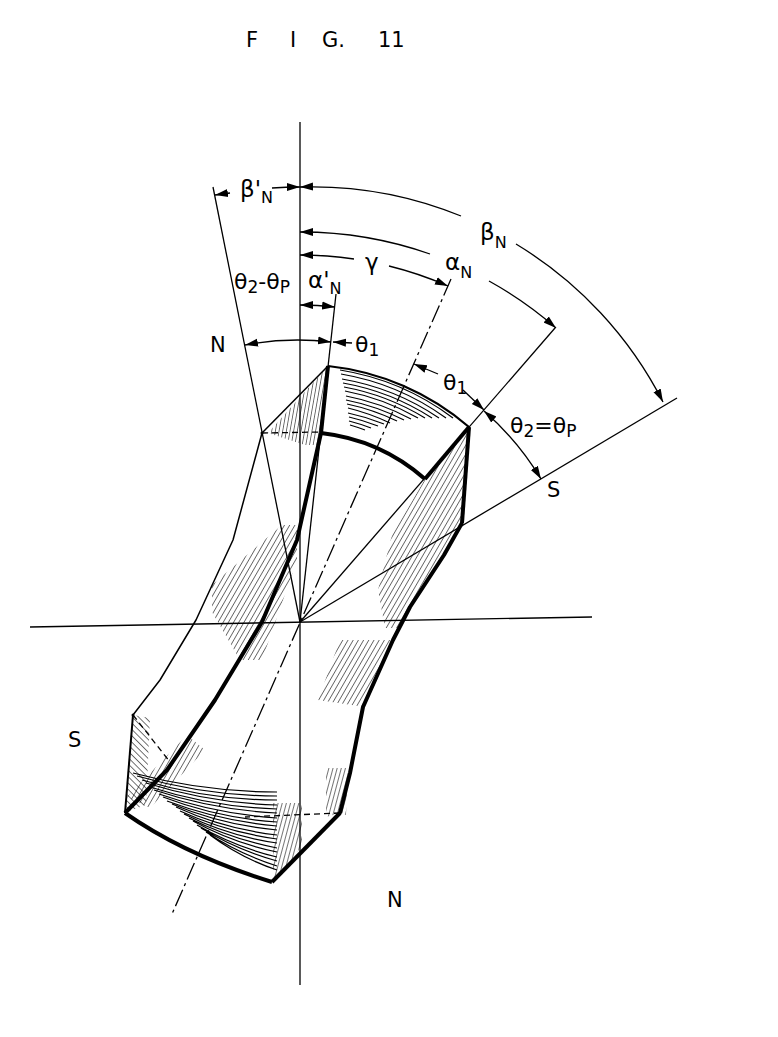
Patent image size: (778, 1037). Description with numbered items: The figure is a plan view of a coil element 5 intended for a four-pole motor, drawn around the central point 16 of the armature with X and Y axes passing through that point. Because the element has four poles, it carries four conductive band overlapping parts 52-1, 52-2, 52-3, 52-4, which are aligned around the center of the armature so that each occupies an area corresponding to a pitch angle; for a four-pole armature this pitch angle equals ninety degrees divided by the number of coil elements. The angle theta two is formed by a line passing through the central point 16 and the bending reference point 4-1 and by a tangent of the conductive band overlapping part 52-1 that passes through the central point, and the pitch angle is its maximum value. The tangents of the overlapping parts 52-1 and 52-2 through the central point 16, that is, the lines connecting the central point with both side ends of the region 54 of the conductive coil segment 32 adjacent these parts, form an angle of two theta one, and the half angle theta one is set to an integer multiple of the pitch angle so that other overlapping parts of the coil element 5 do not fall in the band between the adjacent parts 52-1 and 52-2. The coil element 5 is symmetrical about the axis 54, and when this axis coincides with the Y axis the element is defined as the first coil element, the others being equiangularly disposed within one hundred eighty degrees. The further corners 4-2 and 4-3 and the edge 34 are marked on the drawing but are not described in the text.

The coil element 5 is at (457, 587).
The central point 16 is at (300, 622).
The conductive coil segment 32 is at (351, 432).
The outer edge surface 34 is at (355, 690).
The axis 54 is at (393, 450).
The conductive band overlapping part 52-1 is at (290, 408).
The conductive band overlapping part 52-2 is at (460, 495).
The conductive band overlapping part 52-3 is at (308, 832).
The conductive band overlapping part 52-4 is at (137, 770).
The bending reference point 4-1 is at (262, 433).
The second corner 4-2 is at (463, 527).
The third corner 4-3 is at (132, 714).